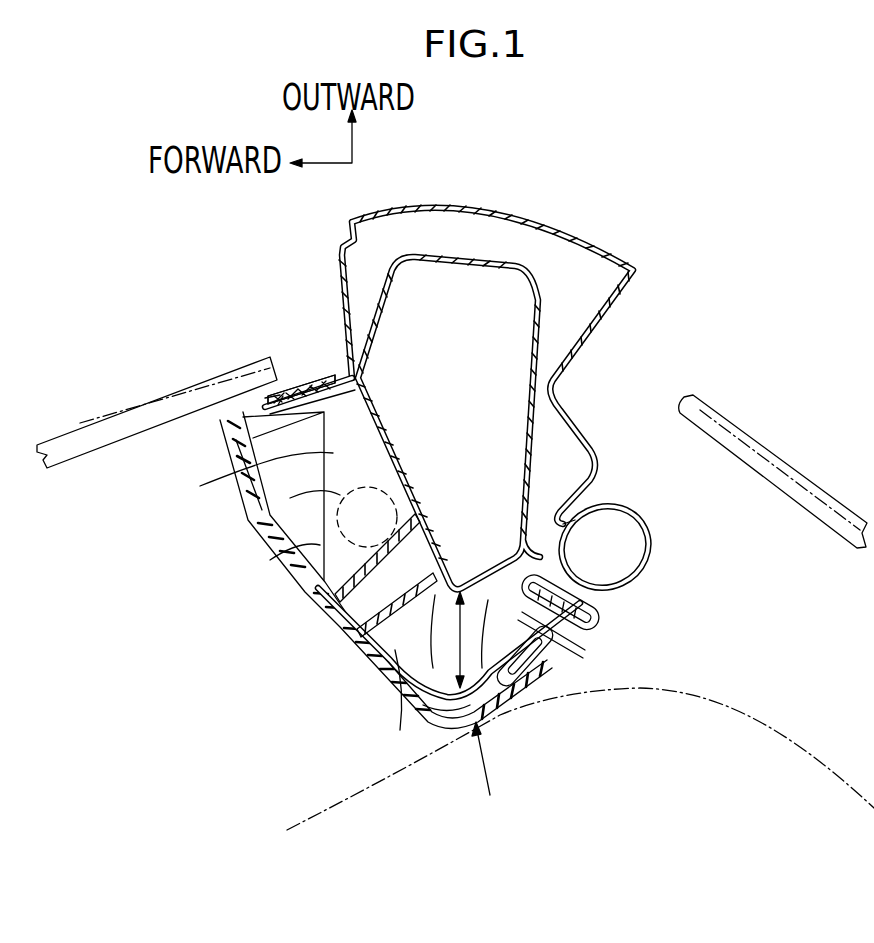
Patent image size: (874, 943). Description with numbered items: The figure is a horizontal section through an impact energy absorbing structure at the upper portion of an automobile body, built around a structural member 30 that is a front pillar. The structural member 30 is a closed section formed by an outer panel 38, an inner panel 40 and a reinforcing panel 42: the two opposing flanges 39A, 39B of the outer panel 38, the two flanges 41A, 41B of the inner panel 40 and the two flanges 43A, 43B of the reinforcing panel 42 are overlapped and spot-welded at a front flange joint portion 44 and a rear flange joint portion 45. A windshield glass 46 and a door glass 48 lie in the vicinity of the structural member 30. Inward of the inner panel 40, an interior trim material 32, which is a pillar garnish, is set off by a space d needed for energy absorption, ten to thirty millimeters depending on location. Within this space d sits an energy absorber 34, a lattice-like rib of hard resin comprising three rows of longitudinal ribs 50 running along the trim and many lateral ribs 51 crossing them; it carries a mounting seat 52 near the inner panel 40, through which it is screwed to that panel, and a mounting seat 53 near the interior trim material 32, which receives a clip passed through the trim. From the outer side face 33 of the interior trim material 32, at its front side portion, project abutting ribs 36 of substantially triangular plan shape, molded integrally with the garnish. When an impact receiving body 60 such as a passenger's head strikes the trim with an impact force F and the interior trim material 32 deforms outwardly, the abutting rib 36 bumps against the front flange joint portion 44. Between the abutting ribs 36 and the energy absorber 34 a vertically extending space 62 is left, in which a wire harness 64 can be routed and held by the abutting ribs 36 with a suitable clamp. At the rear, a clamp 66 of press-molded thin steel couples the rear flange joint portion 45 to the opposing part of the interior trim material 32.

The structural member 30 is at (563, 212).
The interior trim material 32 is at (377, 648).
The outer side face 33 is at (262, 540).
The energy absorber 34 is at (312, 614).
The abutting rib 36 is at (250, 506).
The outer panel 38 is at (612, 250).
The flange of outer panel 39A is at (287, 393).
The flange of outer panel 39B is at (593, 590).
The inner panel 40 is at (463, 728).
The flange of inner panel 41A is at (280, 400).
The flange of inner panel 41B is at (610, 633).
The reinforcing panel 42 is at (466, 255).
The flange of reinforcing panel 43A is at (327, 387).
The flange of reinforcing panel 43B is at (580, 613).
The flange joint portion 44 is at (265, 408).
The flange joint portion 45 is at (597, 630).
The windshield glass 46 is at (120, 414).
The door glass 48 is at (768, 446).
The longitudinal rib 50 is at (308, 594).
The lateral rib 51 is at (400, 652).
The mounting seat 52 is at (352, 630).
The mounting seat 53 is at (413, 700).
The impact receiving body 60 is at (813, 743).
The space 62 is at (243, 478).
The wire harness 64 is at (337, 562).
The clamp 66 is at (587, 630).
The space d is at (353, 550).
The impact force F is at (489, 776).